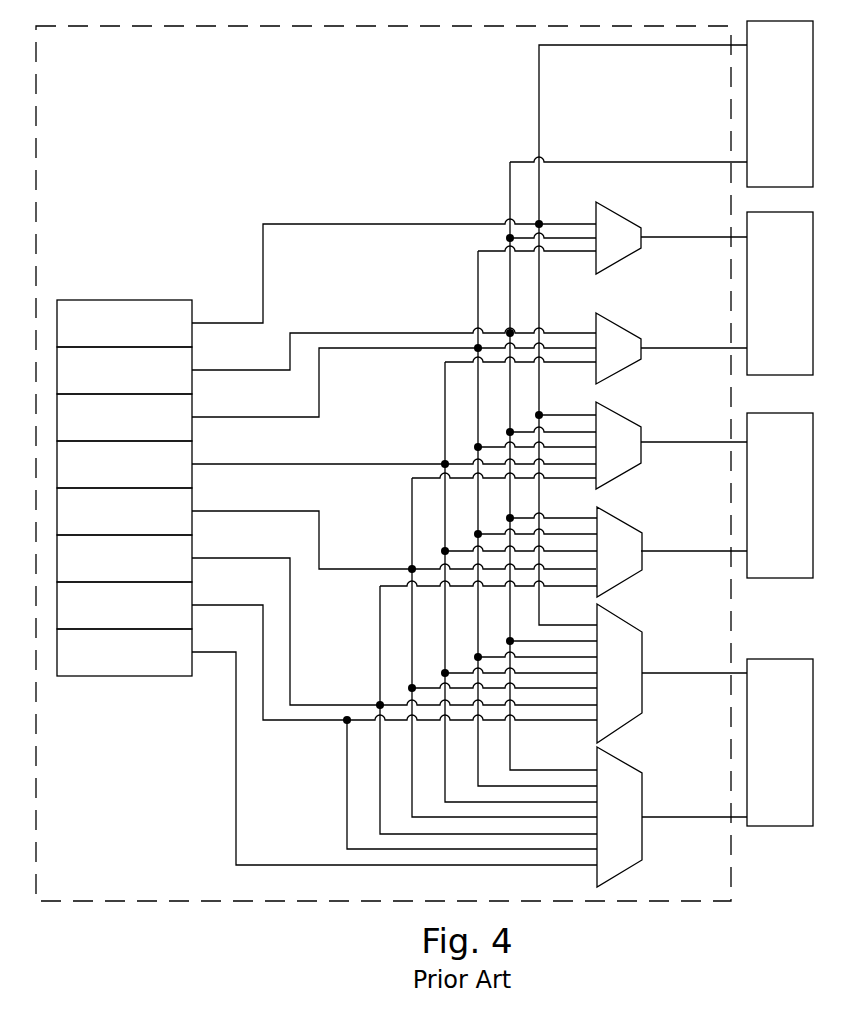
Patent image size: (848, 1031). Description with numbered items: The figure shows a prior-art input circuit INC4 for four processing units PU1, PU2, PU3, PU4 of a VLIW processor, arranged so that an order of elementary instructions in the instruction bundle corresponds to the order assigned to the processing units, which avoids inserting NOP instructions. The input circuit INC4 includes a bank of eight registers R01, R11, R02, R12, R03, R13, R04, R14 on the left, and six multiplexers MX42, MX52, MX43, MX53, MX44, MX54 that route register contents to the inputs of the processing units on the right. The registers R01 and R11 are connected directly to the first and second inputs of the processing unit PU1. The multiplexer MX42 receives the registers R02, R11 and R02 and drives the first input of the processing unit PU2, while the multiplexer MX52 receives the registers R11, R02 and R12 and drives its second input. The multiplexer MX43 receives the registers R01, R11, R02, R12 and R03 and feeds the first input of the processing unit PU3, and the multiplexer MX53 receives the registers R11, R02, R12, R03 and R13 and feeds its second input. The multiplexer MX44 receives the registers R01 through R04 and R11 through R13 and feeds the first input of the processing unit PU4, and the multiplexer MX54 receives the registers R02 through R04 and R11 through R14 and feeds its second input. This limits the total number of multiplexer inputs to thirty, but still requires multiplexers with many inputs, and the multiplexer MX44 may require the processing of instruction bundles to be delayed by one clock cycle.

The input circuit INC4 is at (280, 94).
The register R01 is at (102, 336).
The register R11 is at (102, 383).
The register R02 is at (102, 430).
The register R12 is at (102, 477).
The register R03 is at (102, 524).
The register R13 is at (102, 571).
The register R04 is at (102, 618).
The register R14 is at (102, 665).
The processing unit PU1 is at (759, 114).
The processing unit PU2 is at (759, 304).
The processing unit PU3 is at (759, 507).
The processing unit PU4 is at (759, 754).
The multiplexer MX42 is at (630, 222).
The multiplexer MX52 is at (630, 333).
The multiplexer MX43 is at (630, 417).
The multiplexer MX53 is at (623, 585).
The multiplexer MX44 is at (633, 622).
The multiplexer MX54 is at (623, 872).